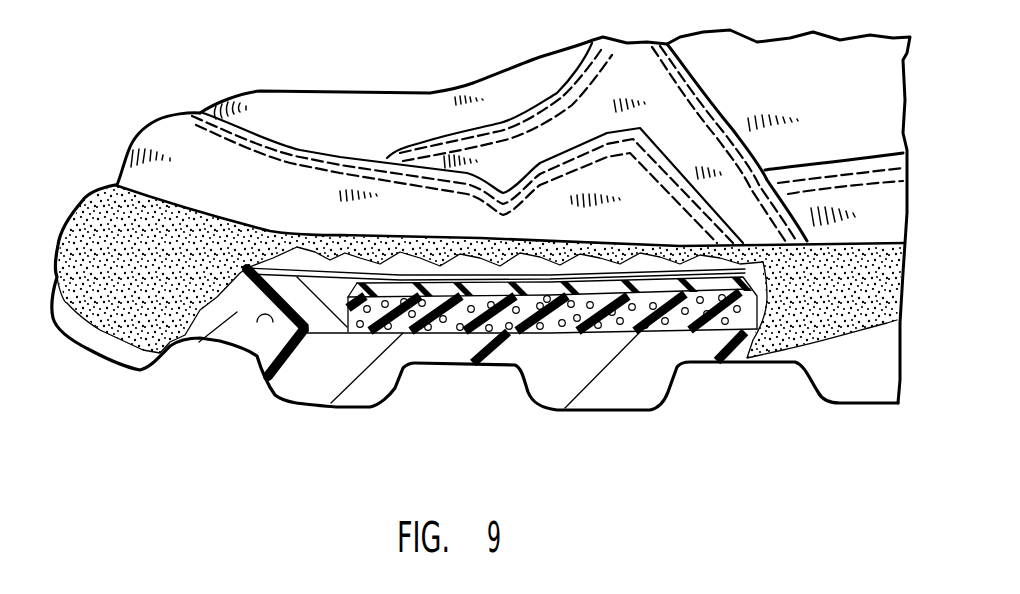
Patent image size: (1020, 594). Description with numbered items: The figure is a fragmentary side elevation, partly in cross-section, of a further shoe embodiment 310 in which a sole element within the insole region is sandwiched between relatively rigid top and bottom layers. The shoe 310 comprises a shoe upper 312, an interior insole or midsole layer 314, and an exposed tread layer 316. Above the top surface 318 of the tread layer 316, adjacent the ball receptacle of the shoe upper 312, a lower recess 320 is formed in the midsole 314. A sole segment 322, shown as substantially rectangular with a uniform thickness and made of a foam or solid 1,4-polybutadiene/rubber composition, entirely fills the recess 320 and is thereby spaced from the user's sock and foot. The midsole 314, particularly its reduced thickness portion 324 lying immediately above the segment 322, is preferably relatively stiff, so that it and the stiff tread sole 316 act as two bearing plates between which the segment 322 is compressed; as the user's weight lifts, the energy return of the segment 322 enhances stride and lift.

The shoe embodiment 310 is at (350, 62).
The shoe upper 312 is at (249, 86).
The midsole layer 314 is at (293, 262).
The tread layer 316 is at (313, 414).
The top surface 318 is at (256, 322).
The lower recess 320 is at (561, 294).
The sole segment 322 is at (604, 295).
The reduced thickness portion 324 is at (447, 290).